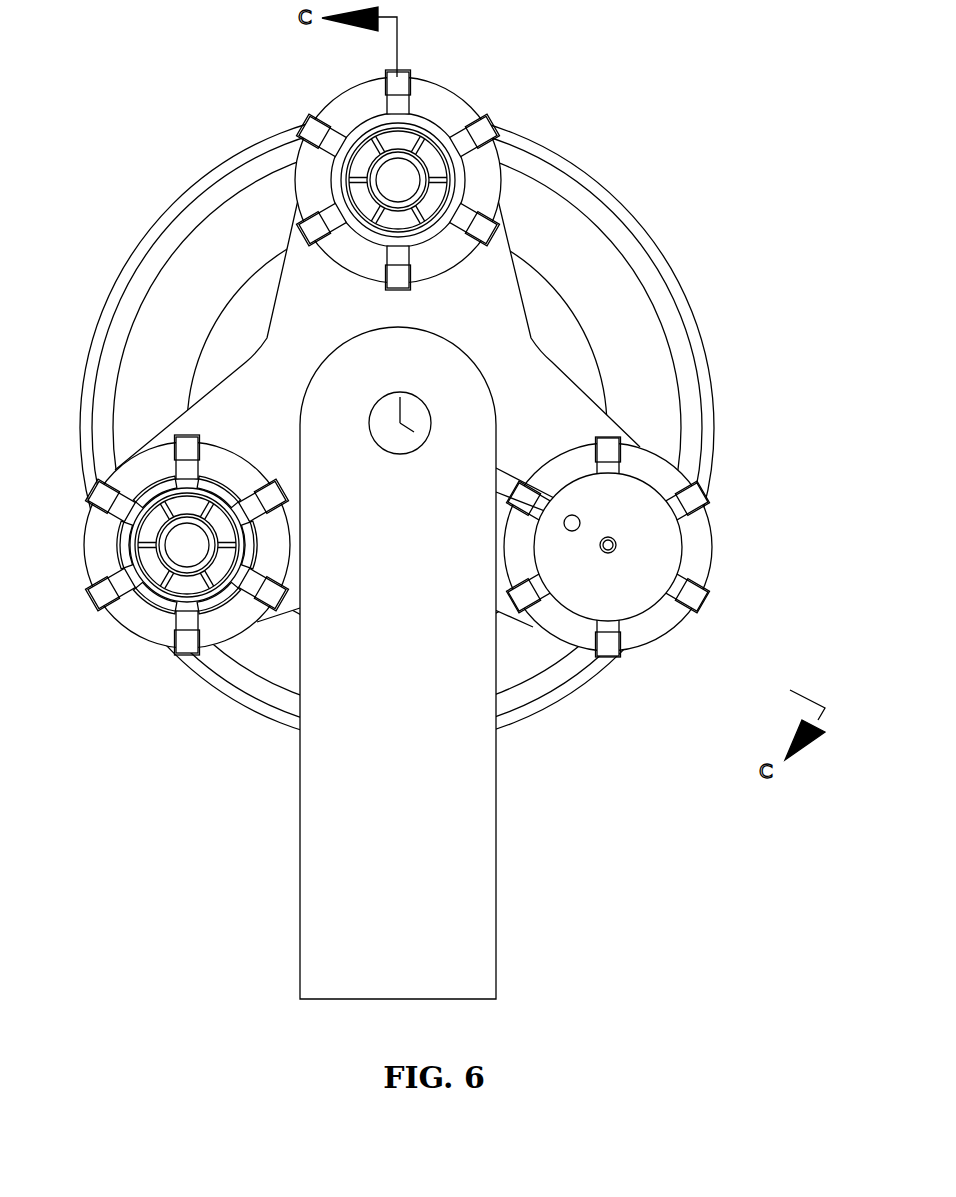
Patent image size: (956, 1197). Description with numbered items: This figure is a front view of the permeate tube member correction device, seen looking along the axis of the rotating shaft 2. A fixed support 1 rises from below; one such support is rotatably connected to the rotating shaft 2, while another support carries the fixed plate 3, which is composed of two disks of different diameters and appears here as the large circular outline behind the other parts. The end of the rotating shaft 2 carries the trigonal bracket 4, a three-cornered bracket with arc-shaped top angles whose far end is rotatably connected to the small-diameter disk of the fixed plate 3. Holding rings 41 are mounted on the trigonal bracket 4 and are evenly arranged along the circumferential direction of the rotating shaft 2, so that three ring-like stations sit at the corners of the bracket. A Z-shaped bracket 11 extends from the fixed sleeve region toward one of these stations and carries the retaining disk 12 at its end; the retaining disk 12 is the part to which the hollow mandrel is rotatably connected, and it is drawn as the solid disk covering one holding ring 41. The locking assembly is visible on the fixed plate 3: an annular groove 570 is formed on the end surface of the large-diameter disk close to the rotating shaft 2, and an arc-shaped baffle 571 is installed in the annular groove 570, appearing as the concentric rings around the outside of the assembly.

The fixed support 1 is at (363, 800).
The rotating shaft 2 is at (382, 445).
The fixed plate 3 is at (542, 302).
The trigonal bracket 4 is at (245, 395).
The Z-shaped bracket 11 is at (505, 473).
The retaining disk 12 is at (640, 585).
The holding ring 41 is at (663, 470).
The annular groove 570 is at (183, 253).
The arc-shaped baffle 571 is at (650, 272).